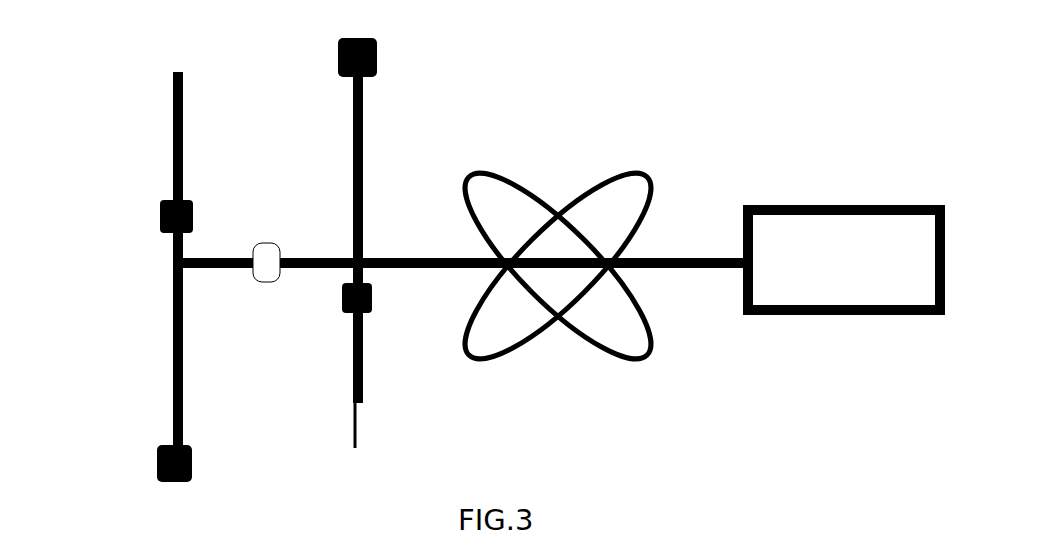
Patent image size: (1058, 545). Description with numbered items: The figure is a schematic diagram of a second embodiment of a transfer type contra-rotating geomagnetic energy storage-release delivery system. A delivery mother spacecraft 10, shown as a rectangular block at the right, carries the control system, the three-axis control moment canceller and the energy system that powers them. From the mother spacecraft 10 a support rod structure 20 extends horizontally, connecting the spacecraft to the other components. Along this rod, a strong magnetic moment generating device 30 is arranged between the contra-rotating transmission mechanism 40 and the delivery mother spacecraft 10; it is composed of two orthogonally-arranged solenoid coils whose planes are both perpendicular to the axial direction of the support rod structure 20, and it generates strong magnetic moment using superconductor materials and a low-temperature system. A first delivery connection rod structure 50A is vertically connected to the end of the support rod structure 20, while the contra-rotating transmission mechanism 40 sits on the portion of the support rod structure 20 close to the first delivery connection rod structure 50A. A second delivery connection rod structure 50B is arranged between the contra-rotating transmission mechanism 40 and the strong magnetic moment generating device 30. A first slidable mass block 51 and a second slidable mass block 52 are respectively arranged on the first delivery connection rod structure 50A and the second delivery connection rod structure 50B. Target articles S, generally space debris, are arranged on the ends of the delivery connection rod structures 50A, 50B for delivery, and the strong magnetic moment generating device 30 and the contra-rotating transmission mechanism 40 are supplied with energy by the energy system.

The delivery mother spacecraft 10 is at (780, 230).
The support rod structure 20 is at (402, 258).
The strong magnetic moment generating device 30 is at (560, 213).
The contra-rotating transmission mechanism 40 is at (266, 246).
The first delivery connection rod structure 50A is at (170, 312).
The second delivery connection rod structure 50B is at (353, 355).
The first slidable mass block 51 is at (163, 205).
The second slidable mass block 52 is at (343, 308).
The target article S is at (345, 55).